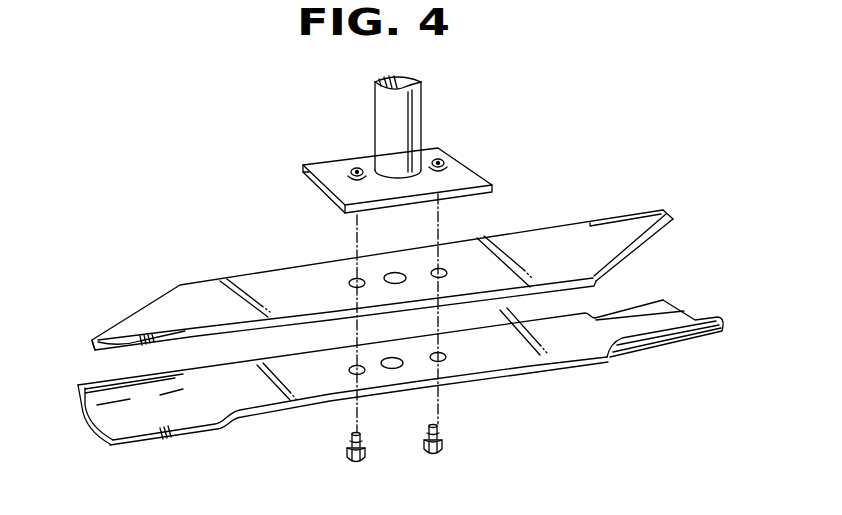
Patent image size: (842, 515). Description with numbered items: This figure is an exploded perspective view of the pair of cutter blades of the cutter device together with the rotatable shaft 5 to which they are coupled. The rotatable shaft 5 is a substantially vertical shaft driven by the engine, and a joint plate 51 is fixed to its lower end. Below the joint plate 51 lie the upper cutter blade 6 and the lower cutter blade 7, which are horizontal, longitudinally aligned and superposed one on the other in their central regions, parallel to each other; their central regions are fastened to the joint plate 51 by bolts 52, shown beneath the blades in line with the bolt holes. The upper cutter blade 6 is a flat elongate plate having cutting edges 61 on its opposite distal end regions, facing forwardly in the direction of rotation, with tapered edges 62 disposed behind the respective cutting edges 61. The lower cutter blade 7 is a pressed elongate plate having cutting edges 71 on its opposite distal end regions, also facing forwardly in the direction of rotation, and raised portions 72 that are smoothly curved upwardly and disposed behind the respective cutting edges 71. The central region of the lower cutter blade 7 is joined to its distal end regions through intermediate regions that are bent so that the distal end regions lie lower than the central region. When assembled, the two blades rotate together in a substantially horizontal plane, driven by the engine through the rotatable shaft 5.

The rotatable shaft 5 is at (387, 125).
The joint plate 51 is at (468, 172).
The bolts 52 is at (351, 459).
The upper cutter blade 6 is at (282, 282).
The cutting edges 61 is at (92, 349).
The tapered edges 62 is at (140, 308).
The lower cutter blade 7 is at (535, 367).
The cutting edges 71 is at (160, 440).
The raised portions 72 is at (78, 405).